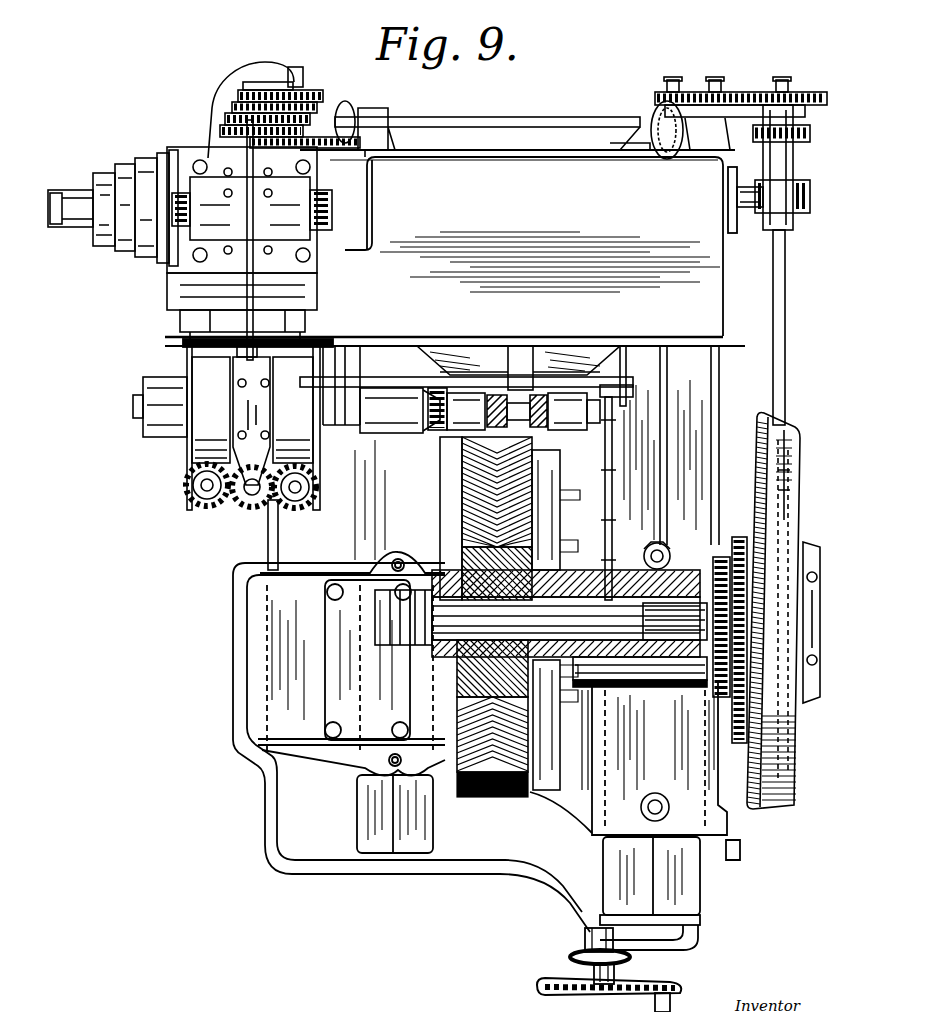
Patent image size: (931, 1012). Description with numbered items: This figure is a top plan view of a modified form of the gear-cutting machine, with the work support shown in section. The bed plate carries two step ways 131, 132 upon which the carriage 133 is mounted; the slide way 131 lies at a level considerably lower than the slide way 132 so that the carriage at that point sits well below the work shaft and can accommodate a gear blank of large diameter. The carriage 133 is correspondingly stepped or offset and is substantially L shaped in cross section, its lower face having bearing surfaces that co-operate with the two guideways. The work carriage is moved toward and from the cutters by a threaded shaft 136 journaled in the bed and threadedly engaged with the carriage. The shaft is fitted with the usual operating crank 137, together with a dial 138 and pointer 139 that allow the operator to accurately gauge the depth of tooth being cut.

The step way 131 is at (372, 830).
The step way 132 is at (687, 880).
The carriage 133 is at (262, 698).
The threaded shaft 136 is at (603, 838).
The operating crank 137 is at (662, 991).
The dial 138 is at (630, 958).
The pointer 139 is at (585, 948).